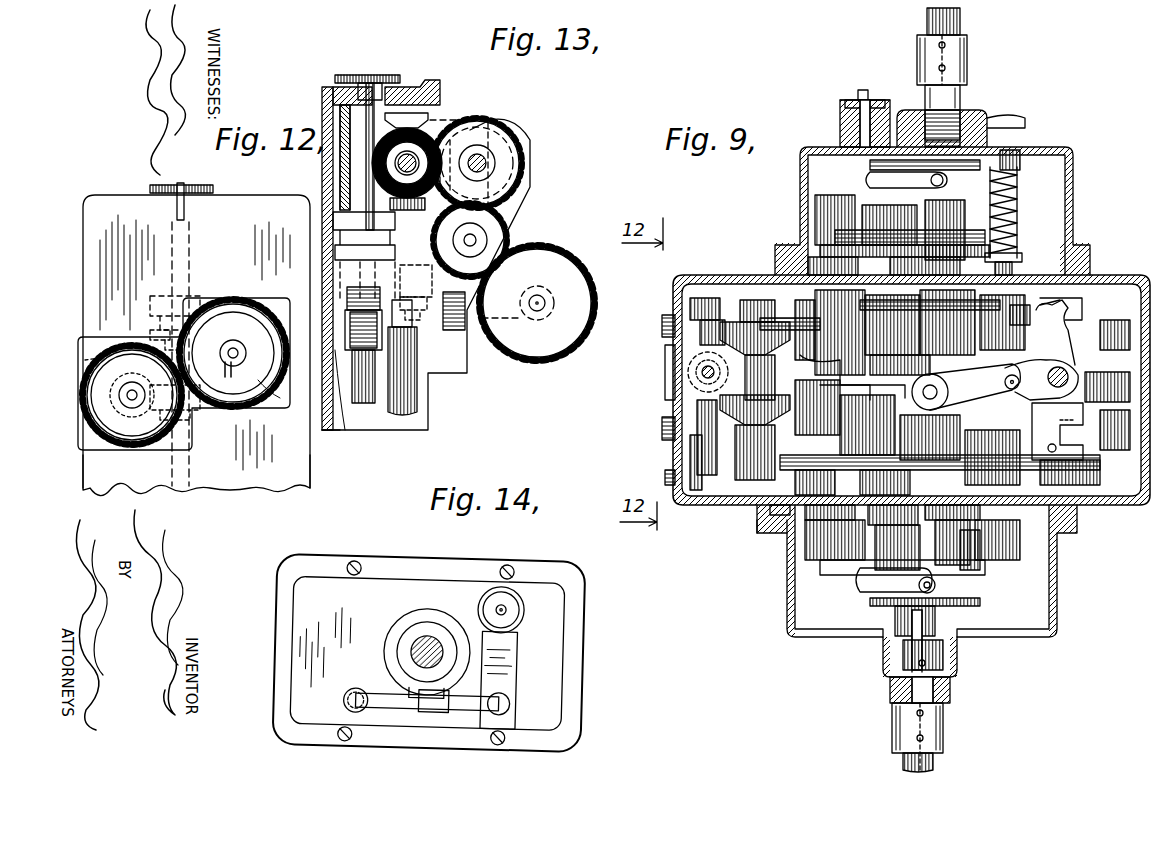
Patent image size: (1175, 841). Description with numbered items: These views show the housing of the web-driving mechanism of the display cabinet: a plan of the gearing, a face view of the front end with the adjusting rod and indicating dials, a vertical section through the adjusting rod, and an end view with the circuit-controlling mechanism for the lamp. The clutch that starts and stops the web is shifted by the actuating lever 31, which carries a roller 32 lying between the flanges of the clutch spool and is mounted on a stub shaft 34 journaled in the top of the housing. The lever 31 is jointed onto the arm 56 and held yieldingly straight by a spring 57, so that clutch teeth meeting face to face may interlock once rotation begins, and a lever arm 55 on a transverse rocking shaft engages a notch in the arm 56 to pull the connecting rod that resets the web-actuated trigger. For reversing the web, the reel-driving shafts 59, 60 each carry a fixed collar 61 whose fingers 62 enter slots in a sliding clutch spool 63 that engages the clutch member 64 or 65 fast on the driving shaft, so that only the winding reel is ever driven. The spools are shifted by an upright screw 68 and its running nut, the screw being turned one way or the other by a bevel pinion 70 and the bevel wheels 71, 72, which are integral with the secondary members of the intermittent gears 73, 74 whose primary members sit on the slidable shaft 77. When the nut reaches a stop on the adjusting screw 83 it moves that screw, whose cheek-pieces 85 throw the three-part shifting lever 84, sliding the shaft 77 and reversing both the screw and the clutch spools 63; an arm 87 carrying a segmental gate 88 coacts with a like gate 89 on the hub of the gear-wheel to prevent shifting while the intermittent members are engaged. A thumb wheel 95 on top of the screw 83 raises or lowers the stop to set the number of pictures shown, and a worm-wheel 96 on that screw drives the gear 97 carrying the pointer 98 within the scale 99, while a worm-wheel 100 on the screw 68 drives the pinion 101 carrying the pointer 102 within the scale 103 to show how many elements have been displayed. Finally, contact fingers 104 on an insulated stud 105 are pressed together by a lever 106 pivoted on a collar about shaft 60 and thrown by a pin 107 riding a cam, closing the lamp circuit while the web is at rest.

In FIG. 9, the actuating lever 31 is at (1004, 385).
In FIG. 9, the roller 32 is at (937, 392).
In FIG. 9, the stub shaft 34 is at (1068, 375).
In FIG. 9, the lever arm 55 is at (1065, 292).
In FIG. 9, the arm 56 is at (1085, 370).
In FIG. 9, the spring 57 is at (1070, 330).
In FIG. 9, the reel-driving shaft 59 is at (935, 758).
In FIG. 14, the reel-driving shaft 60 is at (432, 637).
In FIG. 9, the reel-driving shaft 60 is at (960, 20).
In FIG. 9, the fixed collar 61 is at (950, 677).
In FIG. 9, the fingers 62 is at (940, 650).
In FIG. 9, the sliding clutch spool 63 is at (955, 185).
In FIG. 9, the clutch member 64 is at (985, 242).
In FIG. 9, the clutch member 65 is at (965, 537).
In FIG. 12, the upright screw 68 is at (192, 474).
In FIG. 13, the upright screw 68 is at (410, 348).
In FIG. 13, the bevel pinion 70 is at (450, 225).
In FIG. 9, the bevel pinion 70 is at (770, 315).
In FIG. 9, the bevel wheel 71 is at (735, 320).
In FIG. 9, the bevel wheel 72 is at (740, 413).
In FIG. 9, the intermittent gear 73 is at (775, 320).
In FIG. 9, the intermittent gear 74 is at (697, 450).
In FIG. 9, the shaft 77 is at (830, 320).
In FIG. 13, the adjusting screw 83 is at (360, 410).
In FIG. 13, the shifting lever 84 is at (380, 400).
In FIG. 13, the cheek-pieces 85 is at (345, 395).
In FIG. 9, the arm 87 is at (768, 520).
In FIG. 9, the segmental gate 88 is at (880, 385).
In FIG. 9, the segmental gate 89 is at (757, 510).
In FIG. 13, the thumb wheel 95 is at (370, 75).
In FIG. 12, the worm-wheel 96 is at (160, 336).
In FIG. 13, the worm-wheel 96 is at (345, 205).
In FIG. 9, the worm-wheel 96 is at (675, 372).
In FIG. 12, the gear 97 is at (238, 338).
In FIG. 9, the gear 97 is at (700, 455).
In FIG. 12, the marked dial or pointer 98 is at (216, 375).
In FIG. 12, the scale 99 is at (272, 392).
In FIG. 12, the worm-wheel 100 is at (163, 410).
In FIG. 13, the worm-wheel 100 is at (440, 255).
In FIG. 12, the pinion 101 is at (128, 390).
In FIG. 12, the marked dial or pointer 102 is at (115, 420).
In FIG. 12, the scale 103 is at (95, 408).
In FIG. 14, the contact fingers 104 is at (504, 672).
In FIG. 9, the contact fingers 104 is at (840, 110).
In FIG. 14, the insulated stud 105 is at (512, 600).
In FIG. 9, the insulated stud 105 is at (850, 100).
In FIG. 14, the lever 106 is at (385, 698).
In FIG. 9, the lever 106 is at (905, 110).
In FIG. 9, the pin 107 is at (1012, 220).